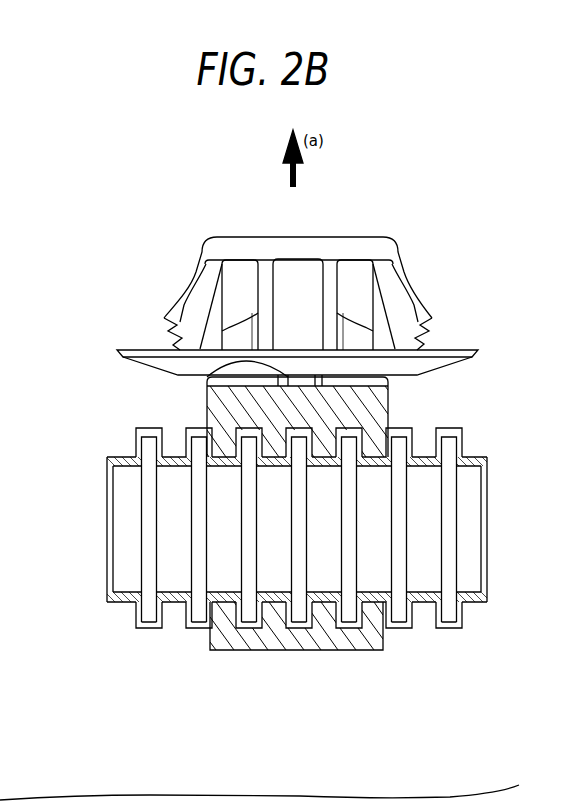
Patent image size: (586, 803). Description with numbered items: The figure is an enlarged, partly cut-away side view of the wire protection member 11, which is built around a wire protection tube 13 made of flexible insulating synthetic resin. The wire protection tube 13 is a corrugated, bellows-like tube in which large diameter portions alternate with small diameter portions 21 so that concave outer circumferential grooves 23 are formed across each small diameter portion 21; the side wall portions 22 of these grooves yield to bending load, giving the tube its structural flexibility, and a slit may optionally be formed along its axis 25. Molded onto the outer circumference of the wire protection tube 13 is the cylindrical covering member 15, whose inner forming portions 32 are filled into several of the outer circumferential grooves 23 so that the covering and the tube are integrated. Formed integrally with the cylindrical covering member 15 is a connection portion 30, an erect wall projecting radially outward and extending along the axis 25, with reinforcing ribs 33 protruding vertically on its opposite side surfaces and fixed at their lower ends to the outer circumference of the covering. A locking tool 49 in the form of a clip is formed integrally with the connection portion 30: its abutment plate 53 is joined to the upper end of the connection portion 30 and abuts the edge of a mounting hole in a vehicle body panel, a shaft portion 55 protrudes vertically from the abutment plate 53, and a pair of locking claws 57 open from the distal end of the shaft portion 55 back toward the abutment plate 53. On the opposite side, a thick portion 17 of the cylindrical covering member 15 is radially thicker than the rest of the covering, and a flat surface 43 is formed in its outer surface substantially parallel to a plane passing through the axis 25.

The wire protection member 11 is at (99, 336).
The wire protection tube 13 is at (482, 452).
The cylindrical covering member 15 is at (238, 657).
The thick portion 17 is at (367, 640).
The small diameter portion 21 is at (452, 627).
The side wall portion 22 is at (161, 604).
The outer circumferential groove 23 is at (470, 603).
The axis 25 is at (422, 610).
The connection portion 30 is at (340, 413).
The inner forming portion 32 is at (280, 445).
The reinforcing rib 33 is at (207, 380).
The flat surface 43 is at (310, 652).
The locking tool 49 is at (258, 236).
The abutment plate 53 is at (472, 352).
The shaft portion 55 is at (300, 273).
The locking claw 57 is at (172, 303).